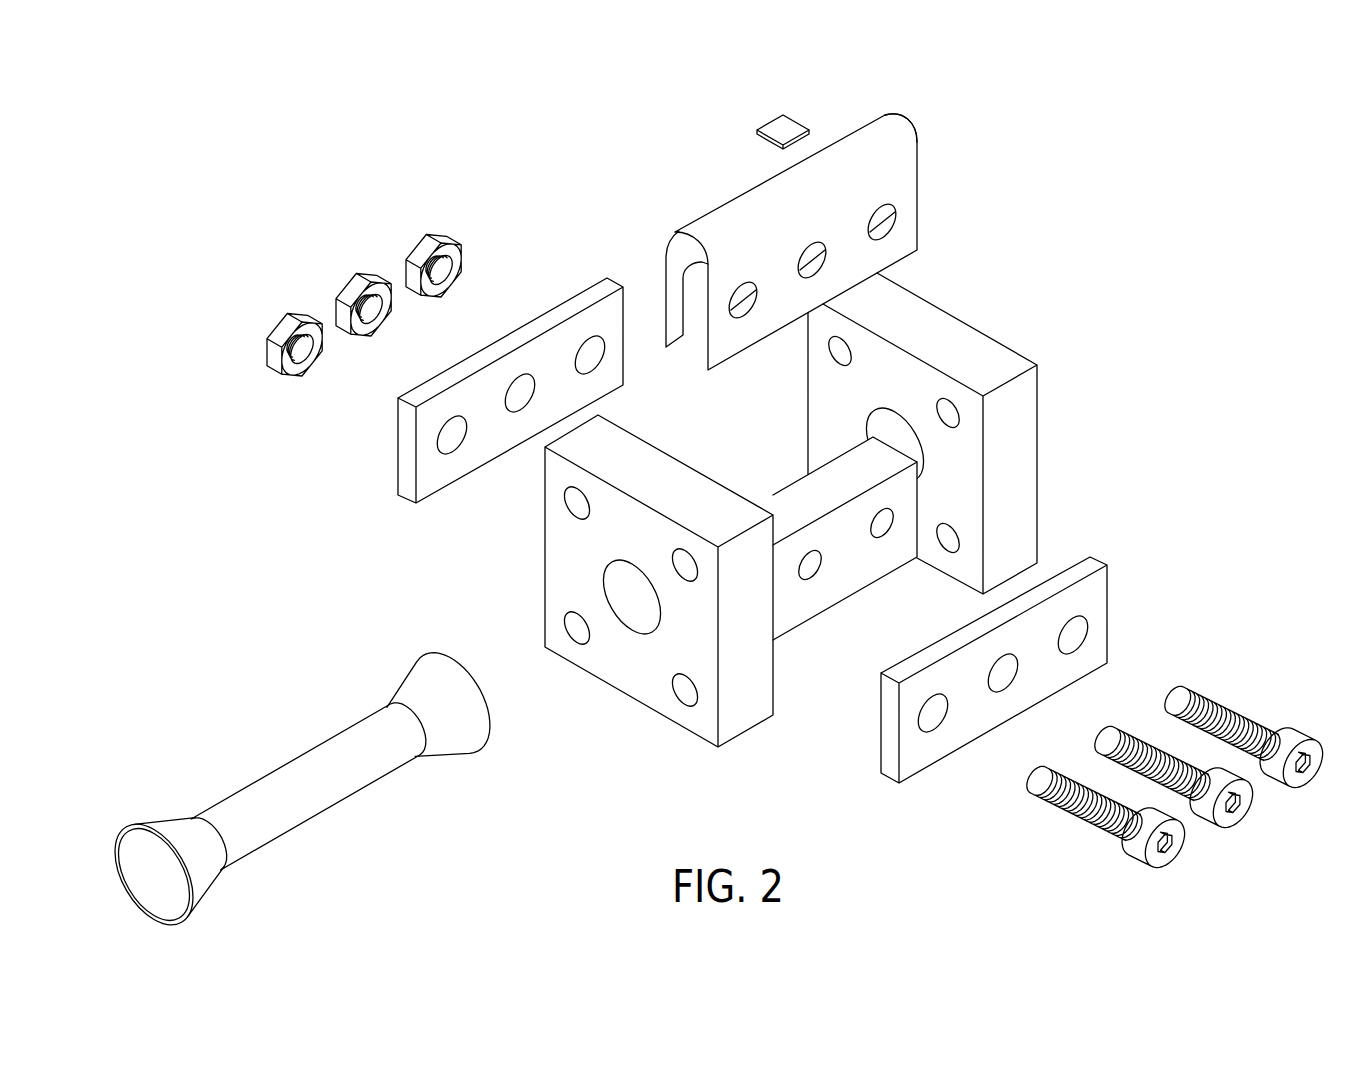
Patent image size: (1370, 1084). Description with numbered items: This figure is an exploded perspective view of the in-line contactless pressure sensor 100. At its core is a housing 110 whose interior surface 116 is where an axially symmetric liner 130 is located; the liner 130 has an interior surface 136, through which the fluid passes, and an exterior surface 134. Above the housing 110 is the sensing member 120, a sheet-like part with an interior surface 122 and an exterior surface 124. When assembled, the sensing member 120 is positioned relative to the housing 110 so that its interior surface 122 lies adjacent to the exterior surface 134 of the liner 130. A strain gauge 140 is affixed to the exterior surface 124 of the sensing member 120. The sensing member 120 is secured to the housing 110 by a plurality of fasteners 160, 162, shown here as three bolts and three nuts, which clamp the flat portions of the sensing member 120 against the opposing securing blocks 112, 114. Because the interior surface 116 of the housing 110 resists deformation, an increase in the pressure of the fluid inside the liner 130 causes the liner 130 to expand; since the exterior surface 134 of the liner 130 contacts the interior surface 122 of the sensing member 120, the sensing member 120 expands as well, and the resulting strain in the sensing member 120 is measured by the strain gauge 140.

The in-line contactless pressure sensor 100 is at (1138, 192).
The housing 110 is at (1037, 440).
The securing block 112 is at (1107, 606).
The securing block 114 is at (620, 284).
The interior surface 116 is at (802, 505).
The sensing member 120 is at (808, 242).
The interior surface 122 is at (680, 246).
The exterior surface 124 is at (905, 163).
The liner 130 is at (306, 797).
The exterior surface 134 is at (488, 698).
The interior surface 136 is at (133, 880).
The strain gauge 140 is at (770, 122).
The fastener 160 is at (1178, 865).
The fastener 162 is at (287, 323).